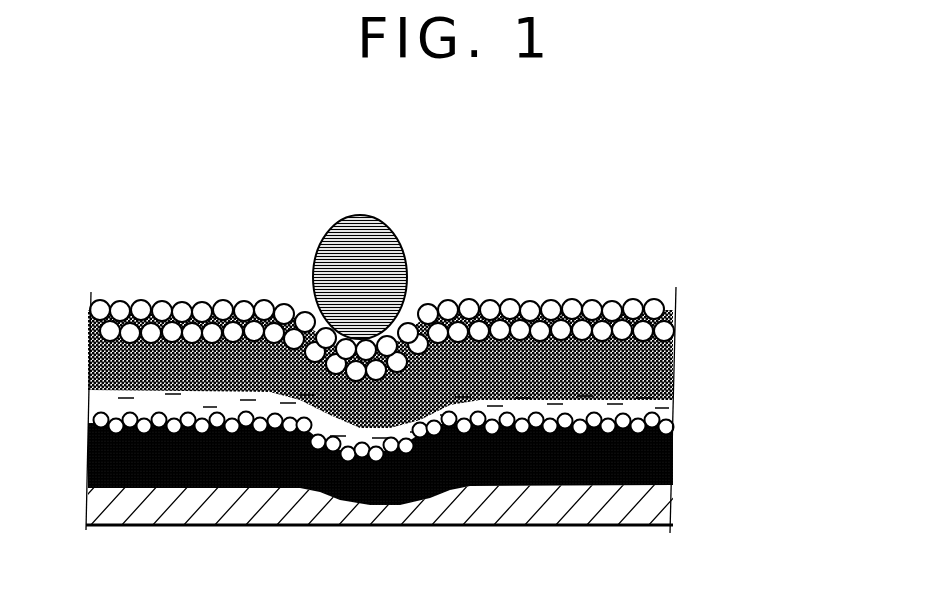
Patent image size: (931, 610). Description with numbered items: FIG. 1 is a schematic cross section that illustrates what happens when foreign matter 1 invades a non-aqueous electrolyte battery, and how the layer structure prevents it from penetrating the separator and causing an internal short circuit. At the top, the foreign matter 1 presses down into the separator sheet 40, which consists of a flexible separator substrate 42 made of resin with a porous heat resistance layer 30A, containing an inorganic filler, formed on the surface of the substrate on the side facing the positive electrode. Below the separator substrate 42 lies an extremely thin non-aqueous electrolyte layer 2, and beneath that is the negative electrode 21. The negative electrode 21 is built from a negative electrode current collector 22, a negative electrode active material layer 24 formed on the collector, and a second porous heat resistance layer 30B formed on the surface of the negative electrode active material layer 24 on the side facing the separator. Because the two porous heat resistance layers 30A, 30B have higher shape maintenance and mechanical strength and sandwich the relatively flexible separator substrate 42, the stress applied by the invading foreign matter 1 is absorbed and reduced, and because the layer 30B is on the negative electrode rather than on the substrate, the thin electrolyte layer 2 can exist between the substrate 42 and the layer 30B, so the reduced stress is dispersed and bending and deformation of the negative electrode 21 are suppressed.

The invading foreign matter 1 is at (406, 212).
The separator sheet 40 is at (465, 352).
The porous heat resistance layer 30A is at (674, 312).
The separator substrate 42 is at (668, 363).
The non-aqueous electrolyte layer 2 is at (668, 402).
The negative electrode 21 is at (435, 470).
The porous heat resistance layer 30B is at (676, 429).
The negative electrode active material layer 24 is at (676, 462).
The negative electrode current collector 22 is at (668, 506).